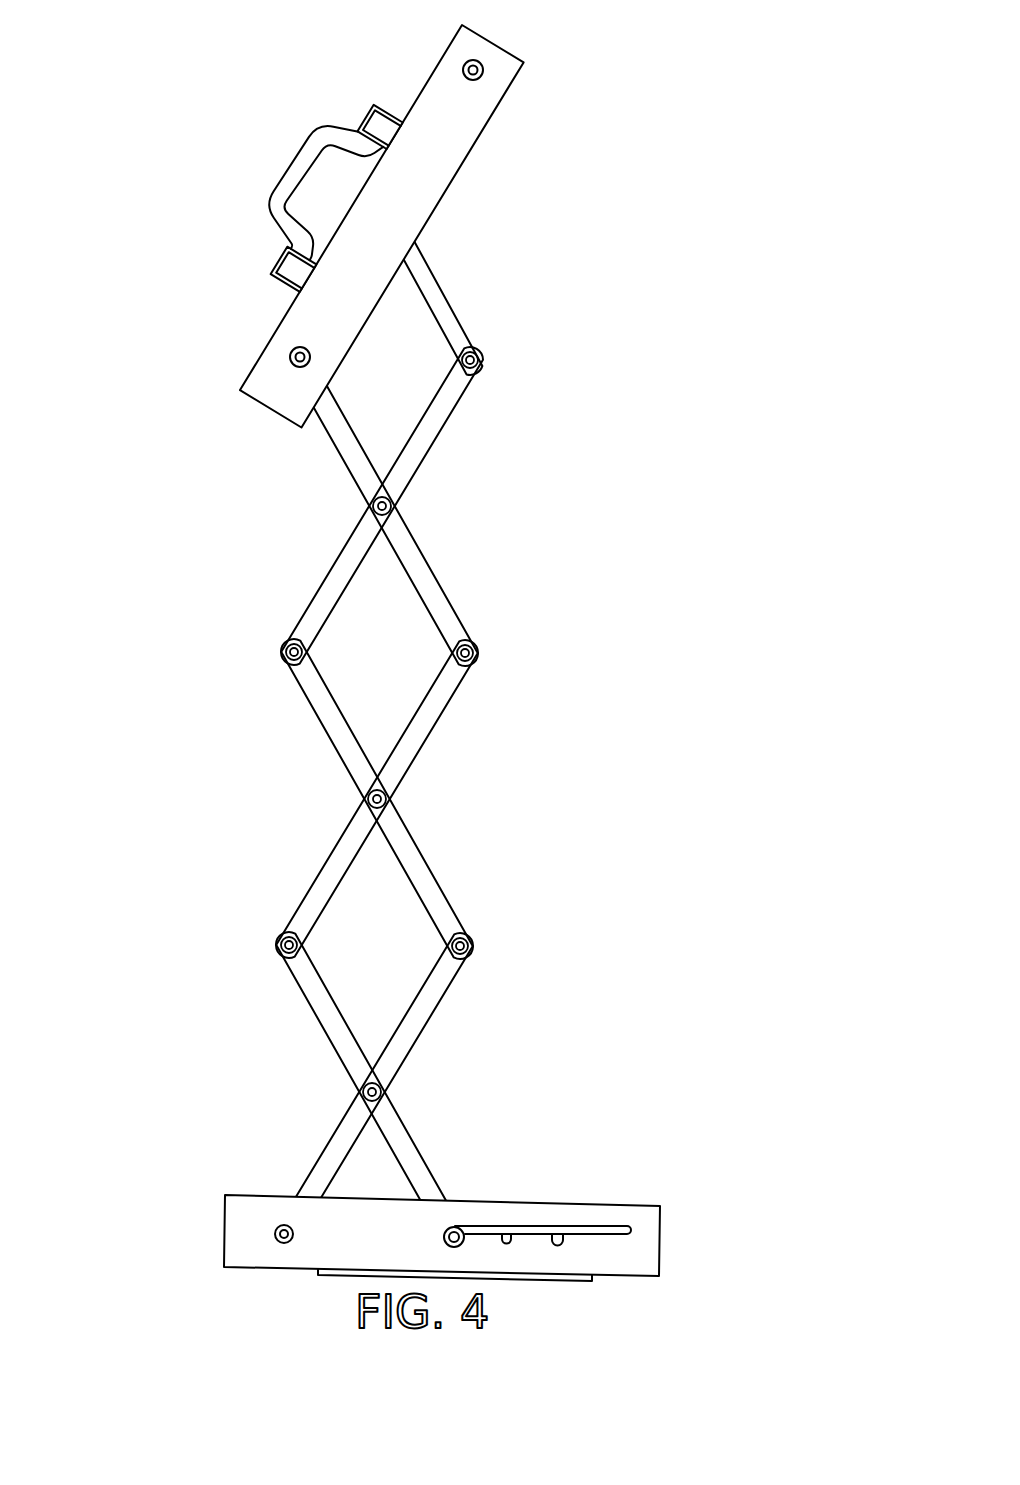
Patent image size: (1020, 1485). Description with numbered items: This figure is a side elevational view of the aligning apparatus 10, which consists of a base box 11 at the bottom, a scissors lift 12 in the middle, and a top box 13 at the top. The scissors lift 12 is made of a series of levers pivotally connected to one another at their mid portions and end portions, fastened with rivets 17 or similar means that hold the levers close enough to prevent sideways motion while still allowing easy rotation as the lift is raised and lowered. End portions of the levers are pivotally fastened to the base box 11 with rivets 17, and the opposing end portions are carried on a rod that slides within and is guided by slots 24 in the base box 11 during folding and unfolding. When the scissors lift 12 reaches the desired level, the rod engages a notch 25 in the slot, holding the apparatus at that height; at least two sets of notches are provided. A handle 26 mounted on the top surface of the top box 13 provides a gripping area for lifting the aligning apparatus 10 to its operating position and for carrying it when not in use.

The aligning apparatus 10 is at (473, 653).
The base box 11 is at (487, 1150).
The scissors lift 12 is at (308, 860).
The top box 13 is at (512, 187).
The rivets 17 is at (275, 1227).
The slots 24 is at (628, 1227).
The notch 25 is at (507, 1238).
The handle 26 is at (297, 152).